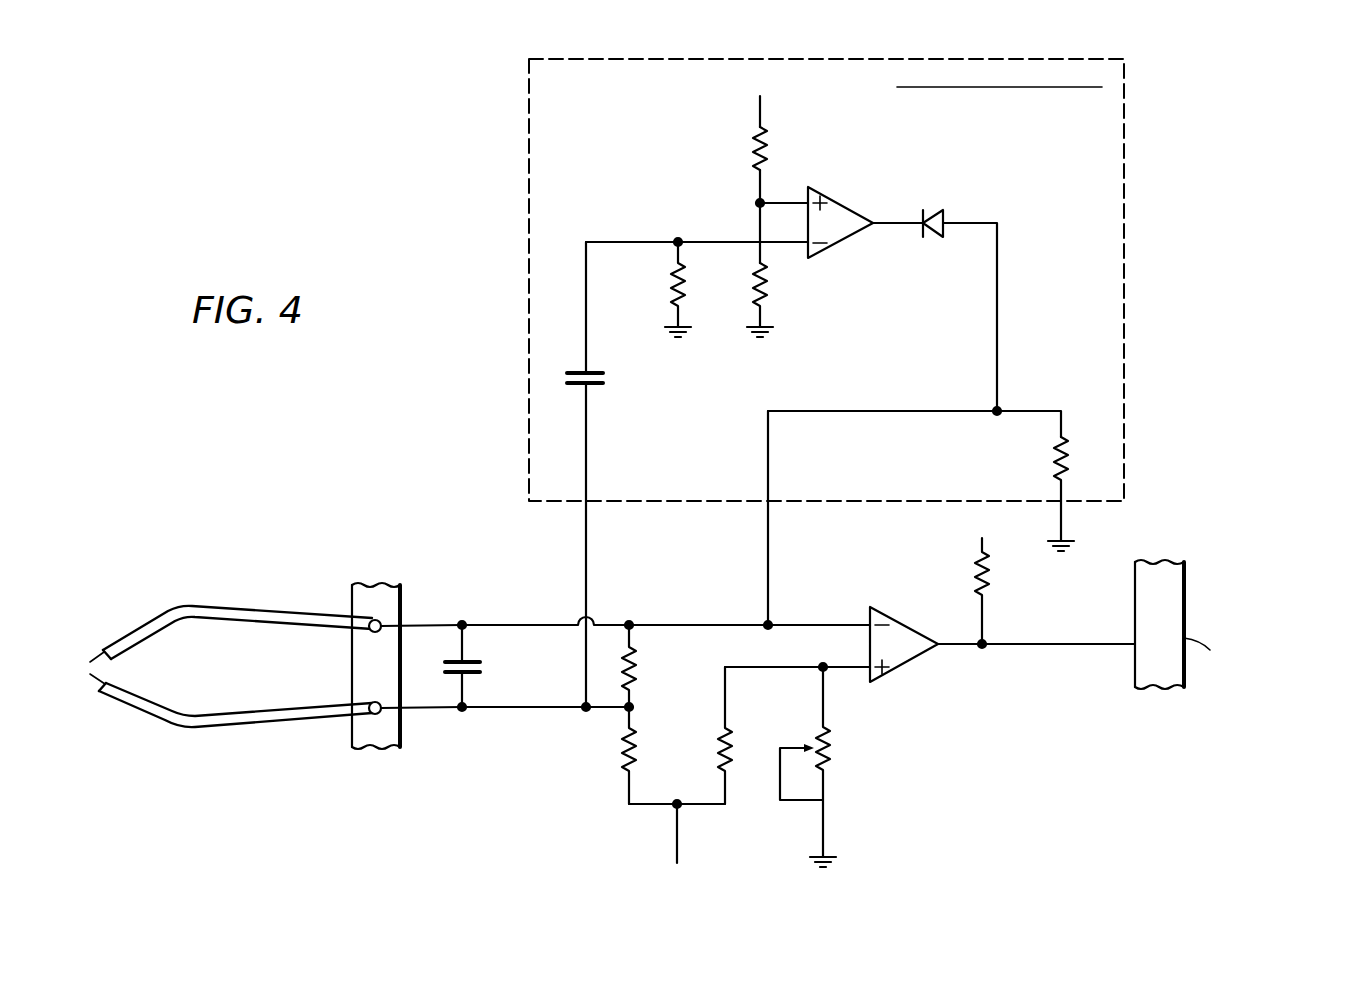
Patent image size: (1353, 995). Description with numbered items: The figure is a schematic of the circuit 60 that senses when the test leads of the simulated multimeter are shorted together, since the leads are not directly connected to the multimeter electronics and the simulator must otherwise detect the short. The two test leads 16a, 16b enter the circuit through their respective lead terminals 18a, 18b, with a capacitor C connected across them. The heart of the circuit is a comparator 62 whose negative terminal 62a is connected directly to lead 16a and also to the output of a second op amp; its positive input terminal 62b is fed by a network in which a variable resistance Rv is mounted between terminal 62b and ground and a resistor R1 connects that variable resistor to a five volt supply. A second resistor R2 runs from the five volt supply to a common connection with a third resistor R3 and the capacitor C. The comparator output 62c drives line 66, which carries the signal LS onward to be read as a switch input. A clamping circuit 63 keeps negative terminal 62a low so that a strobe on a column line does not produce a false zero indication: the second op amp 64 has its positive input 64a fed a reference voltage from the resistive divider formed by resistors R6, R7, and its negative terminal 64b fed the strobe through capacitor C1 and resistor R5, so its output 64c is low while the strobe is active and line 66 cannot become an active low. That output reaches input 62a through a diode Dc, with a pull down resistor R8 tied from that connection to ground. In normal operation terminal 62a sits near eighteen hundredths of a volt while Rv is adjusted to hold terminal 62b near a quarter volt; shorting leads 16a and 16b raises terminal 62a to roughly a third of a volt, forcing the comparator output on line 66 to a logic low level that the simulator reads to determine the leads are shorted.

The test lead 16a is at (190, 607).
The test lead 16b is at (186, 713).
The first terminal lead 18a is at (402, 618).
The second terminal lead 18b is at (402, 716).
The circuit 60 is at (508, 518).
The comparator 62 is at (892, 618).
The negative terminal 62a is at (853, 623).
The positive input terminal 62b is at (855, 669).
The output of comparator 62 62c is at (942, 641).
The clamping circuit 63 is at (1045, 53).
The second op amp 64 is at (836, 198).
The positive input 64a is at (797, 202).
The negative terminal 64b is at (797, 245).
The output of amplifier 64 64c is at (888, 211).
The line 66 is at (1053, 645).
The resistor R1 is at (733, 739).
The second resistor R2 is at (640, 753).
The third resistor R3 is at (640, 673).
The resistor R5 is at (672, 284).
The resistor R6 is at (752, 284).
The resistor R7 is at (752, 152).
The pull down resistor R8 is at (1070, 443).
The variable resistance Rv is at (832, 737).
The capacitor C1 is at (570, 375).
The diode Dc is at (930, 238).
The capacitor C is at (507, 666).
The output signal LS to FIG. 2 LS is at (1243, 624).